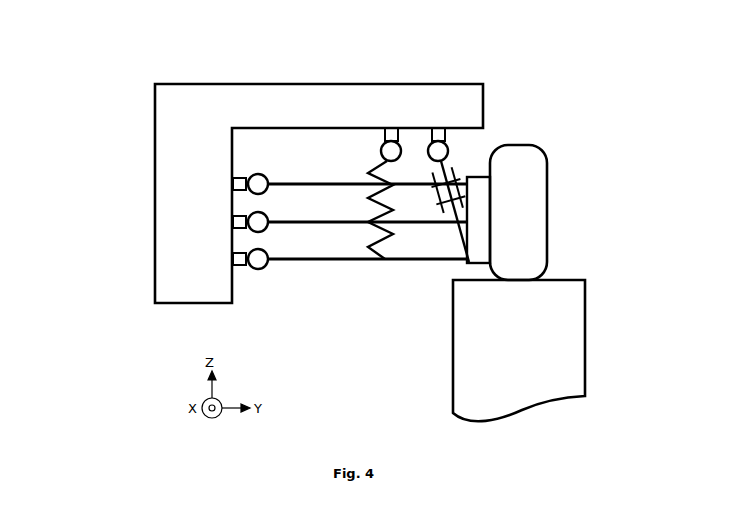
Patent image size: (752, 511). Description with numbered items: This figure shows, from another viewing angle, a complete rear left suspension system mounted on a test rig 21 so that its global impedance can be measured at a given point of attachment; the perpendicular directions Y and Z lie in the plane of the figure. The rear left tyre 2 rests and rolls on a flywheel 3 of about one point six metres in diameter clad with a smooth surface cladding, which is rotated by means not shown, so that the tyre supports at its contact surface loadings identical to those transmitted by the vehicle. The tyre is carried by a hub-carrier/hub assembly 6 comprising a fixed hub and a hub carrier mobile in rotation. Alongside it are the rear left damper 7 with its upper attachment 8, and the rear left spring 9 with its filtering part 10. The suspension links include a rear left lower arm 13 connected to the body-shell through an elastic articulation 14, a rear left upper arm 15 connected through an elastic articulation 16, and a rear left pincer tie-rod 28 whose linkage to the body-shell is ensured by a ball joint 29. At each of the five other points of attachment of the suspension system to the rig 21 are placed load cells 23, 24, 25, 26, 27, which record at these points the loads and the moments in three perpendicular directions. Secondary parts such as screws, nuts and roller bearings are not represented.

The rig 21 is at (227, 106).
The load cell 24 is at (390, 135).
The load cell 23 is at (439, 135).
The filtering part 10 is at (385, 150).
The upper attachment 8 is at (442, 150).
The rear left spring 9 is at (378, 173).
The elastic articulation 16 is at (233, 178).
The load cell 26 is at (238, 184).
The load cell 27 is at (238, 222).
The load cell 25 is at (238, 259).
The ball joint 29 is at (262, 226).
The elastic articulation 14 is at (257, 271).
The rear left upper arm 15 is at (305, 183).
The rear left pincer tie-rod 28 is at (412, 225).
The rear left lower arm 13 is at (292, 262).
The rear left damper 7 is at (462, 170).
The hub-carrier/hub assembly 6 is at (479, 228).
The rear left tyre 2 is at (528, 208).
The flywheel 3 is at (560, 375).